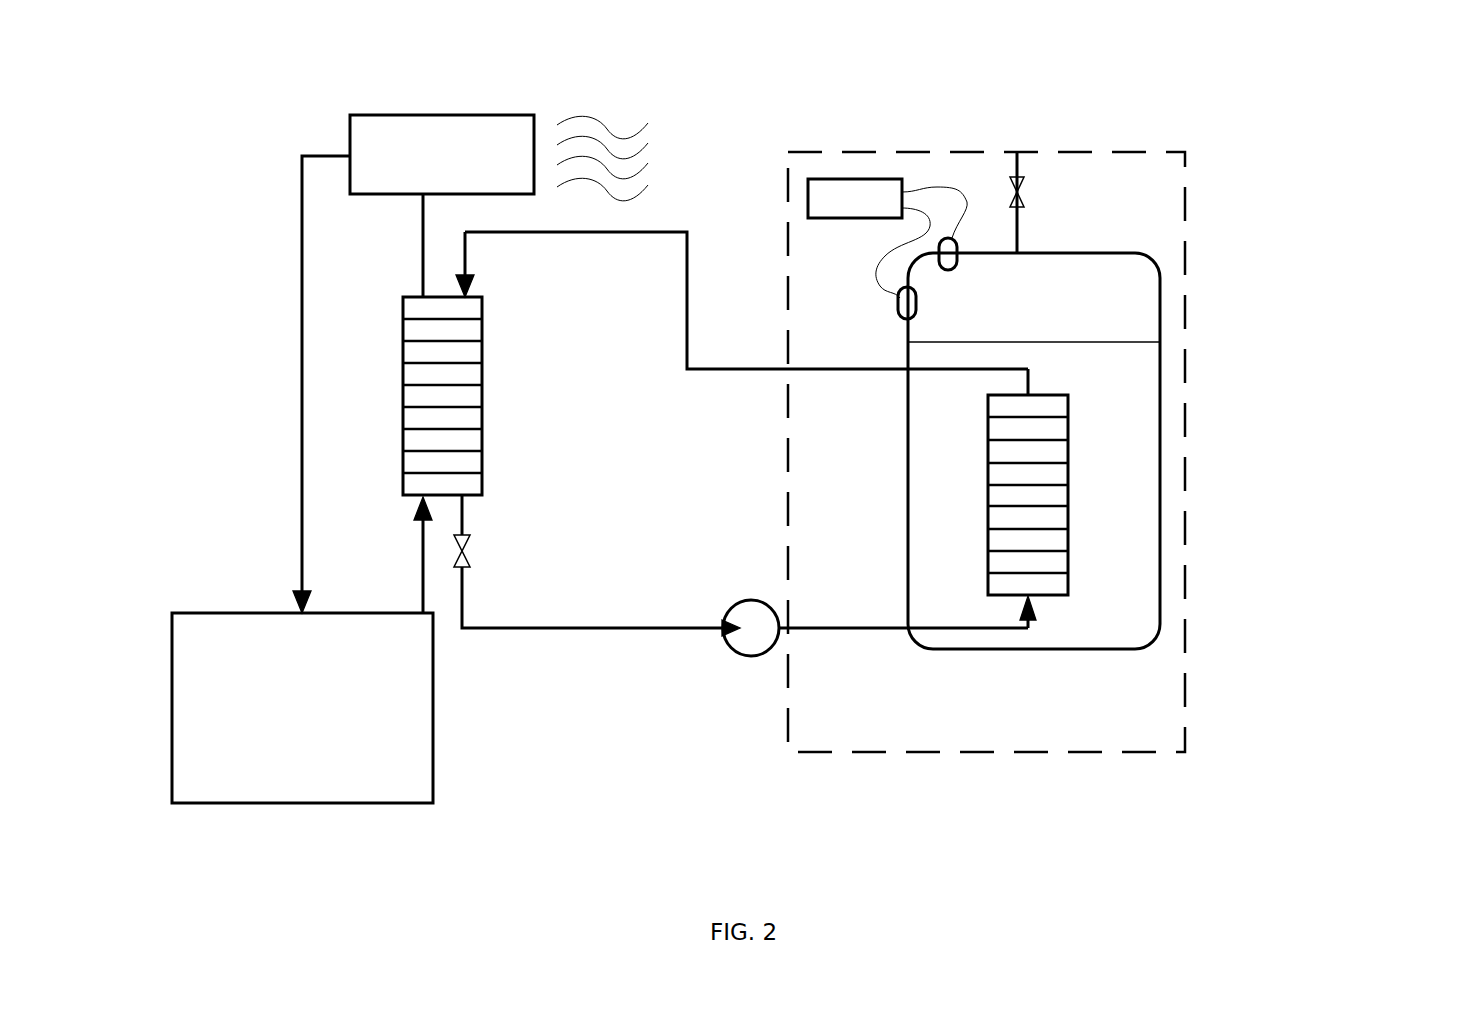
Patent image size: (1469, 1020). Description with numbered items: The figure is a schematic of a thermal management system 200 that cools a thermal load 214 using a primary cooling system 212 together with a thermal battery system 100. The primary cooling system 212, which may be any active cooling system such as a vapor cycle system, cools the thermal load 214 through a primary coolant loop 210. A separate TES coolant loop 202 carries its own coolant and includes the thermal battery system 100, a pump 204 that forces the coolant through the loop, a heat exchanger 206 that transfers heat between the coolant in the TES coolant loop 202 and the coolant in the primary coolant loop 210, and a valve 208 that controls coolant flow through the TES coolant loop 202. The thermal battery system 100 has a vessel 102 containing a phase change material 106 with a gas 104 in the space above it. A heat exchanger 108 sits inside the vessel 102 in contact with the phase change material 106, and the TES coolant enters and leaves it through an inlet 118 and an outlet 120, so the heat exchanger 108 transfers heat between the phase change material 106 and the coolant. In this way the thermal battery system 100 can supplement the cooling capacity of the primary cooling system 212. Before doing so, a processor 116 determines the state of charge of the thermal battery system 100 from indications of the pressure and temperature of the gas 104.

The thermal battery system 100 is at (1187, 288).
The vessel 102 is at (1153, 260).
The gas 104 is at (1034, 315).
The phase change material 106 is at (1097, 372).
The heat exchanger 108 is at (1070, 495).
The processor 116 is at (916, 235).
The inlet 118 is at (995, 640).
The outlet 120 is at (1003, 368).
The thermal management system 200 is at (1262, 770).
The TES coolant loop 202 is at (601, 637).
The pump 204 is at (748, 657).
The heat exchanger 206 is at (483, 397).
The valve 208 is at (462, 551).
The primary coolant loop 210 is at (302, 323).
The primary cooling system 212 is at (210, 610).
The thermal load 214 is at (415, 112).